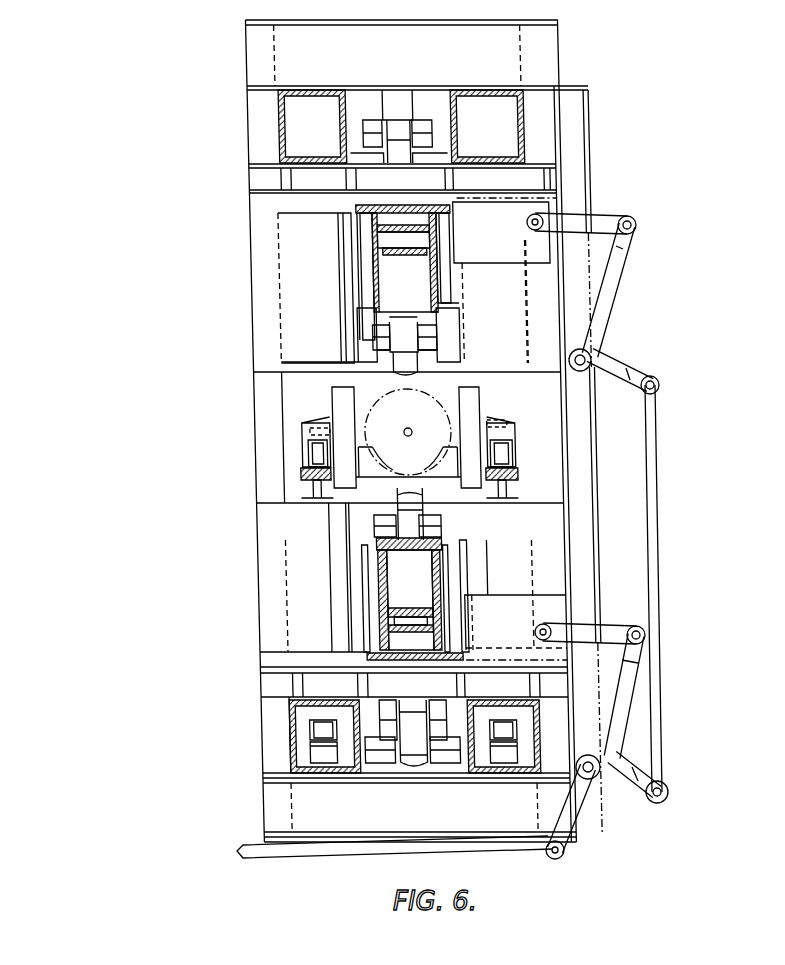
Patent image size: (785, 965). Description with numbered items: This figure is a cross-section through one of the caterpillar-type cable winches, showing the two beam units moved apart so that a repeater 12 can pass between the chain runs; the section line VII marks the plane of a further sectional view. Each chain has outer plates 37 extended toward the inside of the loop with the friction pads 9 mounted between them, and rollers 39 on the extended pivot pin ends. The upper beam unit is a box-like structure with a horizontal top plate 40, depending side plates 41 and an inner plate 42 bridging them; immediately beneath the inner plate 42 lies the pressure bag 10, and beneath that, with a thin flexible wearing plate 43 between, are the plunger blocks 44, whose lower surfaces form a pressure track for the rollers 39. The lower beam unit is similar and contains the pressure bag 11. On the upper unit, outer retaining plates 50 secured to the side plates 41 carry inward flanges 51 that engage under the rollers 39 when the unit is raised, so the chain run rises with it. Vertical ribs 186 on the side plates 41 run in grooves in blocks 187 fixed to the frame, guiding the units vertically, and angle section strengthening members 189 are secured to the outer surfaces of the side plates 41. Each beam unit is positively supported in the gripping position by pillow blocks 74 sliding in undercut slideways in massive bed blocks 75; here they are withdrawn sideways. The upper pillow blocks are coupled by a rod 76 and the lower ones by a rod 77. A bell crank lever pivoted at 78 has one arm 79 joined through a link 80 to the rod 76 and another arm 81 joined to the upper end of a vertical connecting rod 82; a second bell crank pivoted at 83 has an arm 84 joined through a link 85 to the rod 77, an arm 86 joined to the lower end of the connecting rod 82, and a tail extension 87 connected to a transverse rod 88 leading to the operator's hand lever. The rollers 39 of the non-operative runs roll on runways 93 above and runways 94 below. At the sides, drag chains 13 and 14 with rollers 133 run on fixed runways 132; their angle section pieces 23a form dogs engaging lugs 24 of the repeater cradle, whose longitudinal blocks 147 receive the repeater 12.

The pads 9 is at (403, 95).
The pressure bag 10 is at (378, 243).
The pressure bag 11 is at (387, 618).
The repeater 12 is at (436, 408).
The drag chain 13 is at (295, 450).
The drag chain 14 is at (500, 458).
The angle section pieces 23a is at (310, 428).
The lugs 24 is at (298, 437).
The outer plates 37 is at (412, 360).
The rollers 39 is at (372, 120).
The top plate 40 is at (414, 205).
The side plates 41 is at (337, 280).
The inner plate 42 is at (368, 224).
The wearing plate 43 is at (376, 252).
The plunger blocks 44 is at (382, 300).
The outer retaining plates 50 is at (347, 335).
The flanges 51 is at (452, 352).
The pillow blocks 74 is at (527, 255).
The bed blocks 75 is at (459, 198).
The rod 76 is at (527, 222).
The rod 77 is at (535, 633).
The pivot 78 is at (569, 365).
The arm 79 is at (612, 288).
The link 80 is at (606, 227).
The arm 81 is at (618, 366).
The connecting rod 82 is at (657, 470).
The pivot 83 is at (590, 779).
The arm 84 is at (612, 712).
The link 85 is at (618, 627).
The arm 86 is at (630, 773).
The tail extension 87 is at (577, 816).
The transverse rod 88 is at (428, 860).
The runways 93 is at (342, 145).
The runways 94 is at (360, 720).
The runways 132 is at (290, 475).
The rollers 133 is at (295, 458).
The longitudinal blocks 147 is at (406, 437).
The vertical ribs 186 is at (362, 290).
The blocks 187 is at (261, 285).
The angle section strengthening members 189 is at (358, 236).
The section line VII is at (389, 181).